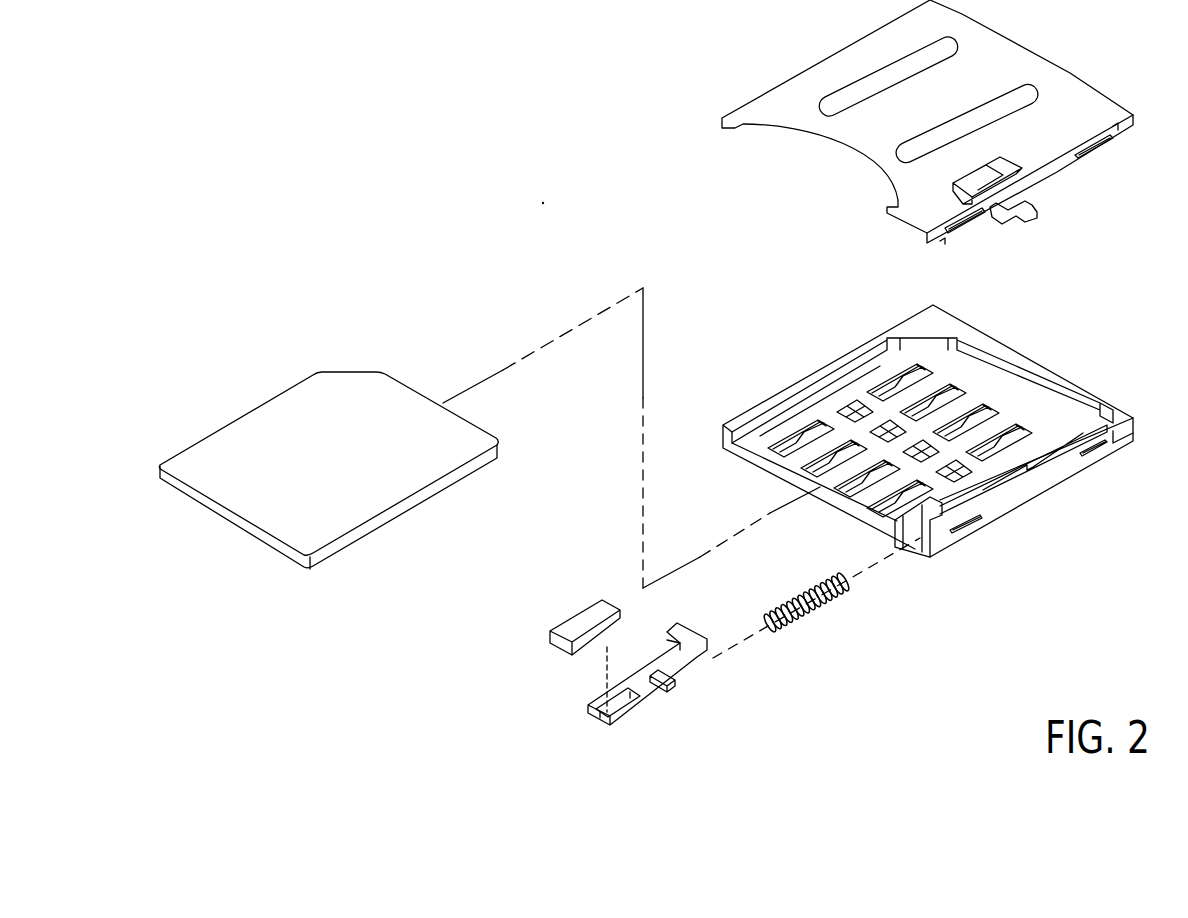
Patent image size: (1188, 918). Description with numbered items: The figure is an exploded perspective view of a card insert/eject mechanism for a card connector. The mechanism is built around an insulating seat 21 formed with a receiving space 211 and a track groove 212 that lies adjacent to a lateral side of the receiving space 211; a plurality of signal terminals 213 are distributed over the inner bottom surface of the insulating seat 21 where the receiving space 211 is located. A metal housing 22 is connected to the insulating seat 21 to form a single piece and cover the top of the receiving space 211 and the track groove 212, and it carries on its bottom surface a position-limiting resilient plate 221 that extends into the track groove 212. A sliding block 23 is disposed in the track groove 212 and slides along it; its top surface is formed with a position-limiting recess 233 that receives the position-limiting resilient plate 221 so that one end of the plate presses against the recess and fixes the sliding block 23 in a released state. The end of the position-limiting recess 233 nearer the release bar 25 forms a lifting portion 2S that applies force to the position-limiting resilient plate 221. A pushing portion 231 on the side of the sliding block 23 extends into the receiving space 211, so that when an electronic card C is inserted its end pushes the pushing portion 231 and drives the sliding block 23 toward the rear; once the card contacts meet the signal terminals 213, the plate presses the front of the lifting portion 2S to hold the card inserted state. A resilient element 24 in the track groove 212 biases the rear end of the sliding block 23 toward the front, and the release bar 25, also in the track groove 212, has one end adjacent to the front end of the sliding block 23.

The electronic card C is at (337, 513).
The insulating seat 21 is at (928, 450).
The receiving space 211 is at (813, 393).
The track groove 212 is at (915, 553).
The signal terminals 213 is at (892, 385).
The metal housing 22 is at (1067, 93).
The position-limiting resilient plate 221 is at (1020, 172).
The sliding block 23 is at (673, 684).
The pushing portion 231 is at (682, 627).
The position-limiting recess 233 is at (663, 705).
The lifting portion 2S is at (633, 712).
The resilient element 24 is at (805, 617).
The release bar 25 is at (577, 625).